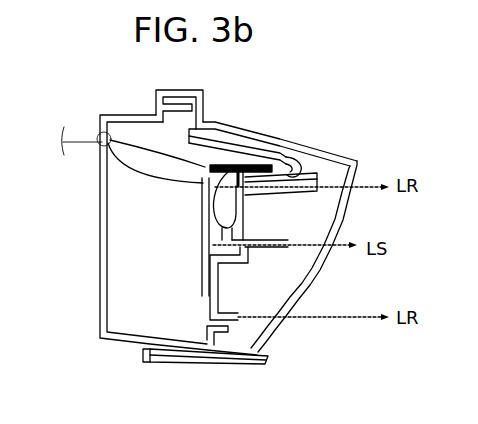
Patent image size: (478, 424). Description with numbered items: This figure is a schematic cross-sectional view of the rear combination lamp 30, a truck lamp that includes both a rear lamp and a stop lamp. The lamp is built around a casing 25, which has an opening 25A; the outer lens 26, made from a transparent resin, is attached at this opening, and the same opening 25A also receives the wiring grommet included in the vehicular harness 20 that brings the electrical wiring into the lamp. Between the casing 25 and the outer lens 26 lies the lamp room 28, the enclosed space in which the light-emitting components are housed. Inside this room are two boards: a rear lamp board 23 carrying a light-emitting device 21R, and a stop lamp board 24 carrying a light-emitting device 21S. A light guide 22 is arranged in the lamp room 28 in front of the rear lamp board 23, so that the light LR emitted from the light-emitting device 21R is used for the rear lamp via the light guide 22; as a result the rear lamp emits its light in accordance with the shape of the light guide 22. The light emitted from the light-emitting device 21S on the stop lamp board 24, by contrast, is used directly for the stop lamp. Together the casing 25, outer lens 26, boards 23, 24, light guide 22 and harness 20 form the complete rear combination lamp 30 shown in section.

The vehicular harness 20 is at (100, 133).
The light-emitting device 21R is at (239, 176).
The light-emitting device 21S is at (203, 243).
The light guide 22 is at (238, 316).
The rear lamp board 23 is at (224, 158).
The stop lamp board 24 is at (118, 187).
The casing 25 is at (112, 117).
The opening 25A is at (102, 136).
The outer lens 26 is at (222, 377).
The lamp room 28 is at (292, 217).
The rear combination lamp 30 is at (312, 132).